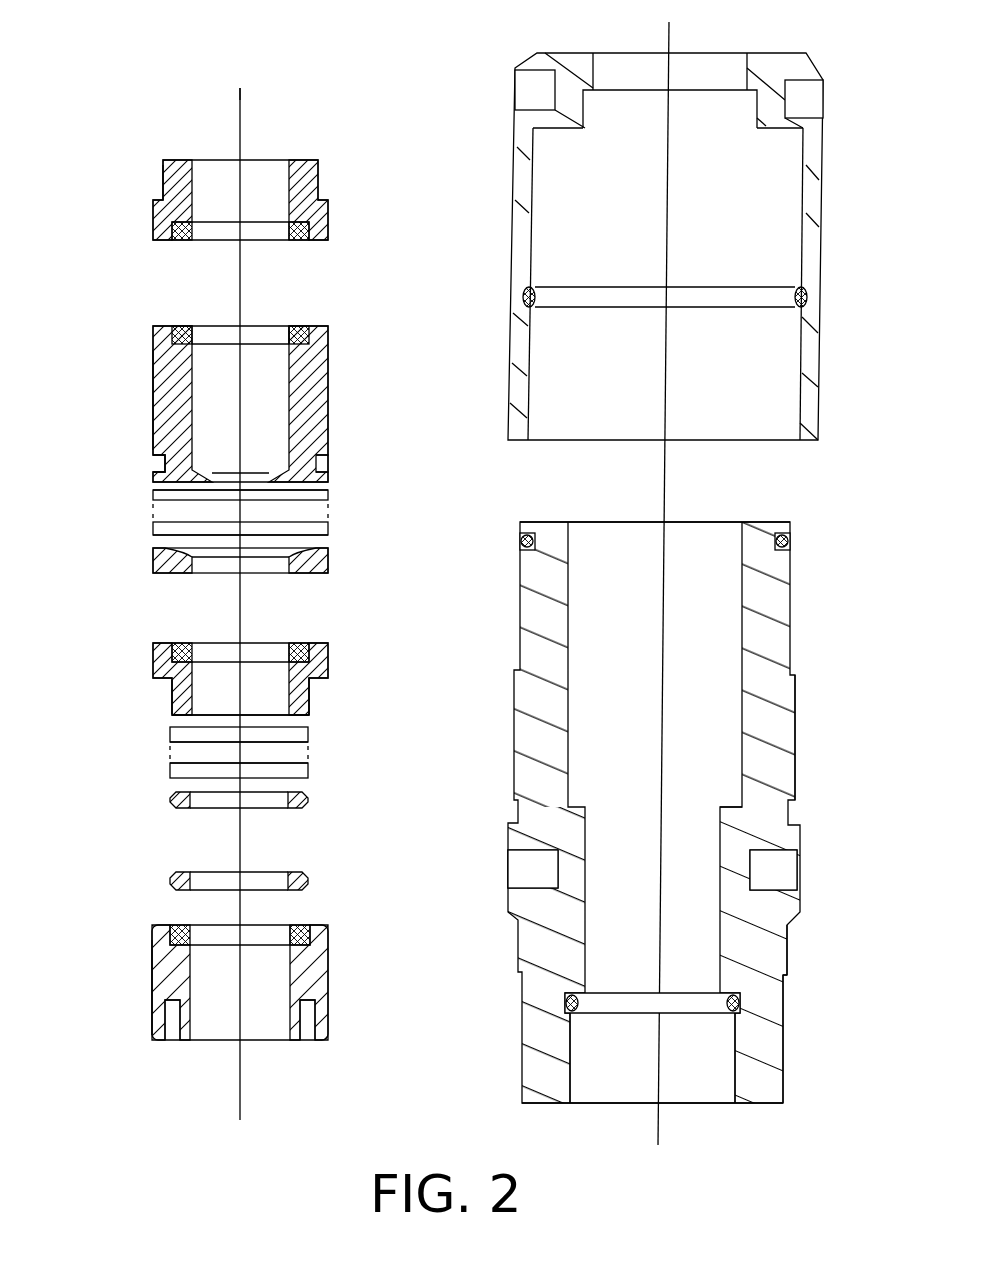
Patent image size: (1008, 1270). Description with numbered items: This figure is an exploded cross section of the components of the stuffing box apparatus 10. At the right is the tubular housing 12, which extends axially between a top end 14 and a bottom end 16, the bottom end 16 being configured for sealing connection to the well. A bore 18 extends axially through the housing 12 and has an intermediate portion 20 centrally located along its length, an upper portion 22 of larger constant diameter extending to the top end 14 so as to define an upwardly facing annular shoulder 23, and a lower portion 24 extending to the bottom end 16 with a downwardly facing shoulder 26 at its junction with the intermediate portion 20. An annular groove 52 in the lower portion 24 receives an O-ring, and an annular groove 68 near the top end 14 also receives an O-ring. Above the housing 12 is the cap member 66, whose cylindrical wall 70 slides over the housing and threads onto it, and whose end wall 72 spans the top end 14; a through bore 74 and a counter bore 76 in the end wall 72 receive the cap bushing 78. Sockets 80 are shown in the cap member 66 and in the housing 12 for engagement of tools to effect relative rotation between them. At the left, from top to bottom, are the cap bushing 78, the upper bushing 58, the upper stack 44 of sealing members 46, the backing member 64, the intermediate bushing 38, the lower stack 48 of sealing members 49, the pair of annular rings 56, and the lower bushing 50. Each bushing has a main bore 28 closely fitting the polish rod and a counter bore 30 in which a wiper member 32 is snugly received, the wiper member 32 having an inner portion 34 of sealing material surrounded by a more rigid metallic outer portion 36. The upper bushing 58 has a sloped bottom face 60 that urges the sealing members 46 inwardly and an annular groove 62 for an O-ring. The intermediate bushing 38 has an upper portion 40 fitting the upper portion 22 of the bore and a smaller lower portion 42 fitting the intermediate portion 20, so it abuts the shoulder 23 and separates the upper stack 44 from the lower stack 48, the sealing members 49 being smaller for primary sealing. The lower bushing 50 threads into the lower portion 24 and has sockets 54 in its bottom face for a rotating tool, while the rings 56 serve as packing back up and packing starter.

The stuffing box apparatus 10 is at (90, 82).
The tubular housing 12 is at (812, 672).
The top end 14 is at (790, 522).
The bottom end 16 is at (758, 1105).
The bore 18 is at (618, 1070).
The intermediate portion 20 is at (735, 938).
The upper portion 22 is at (742, 738).
The upwardly facing annular shoulder 23 is at (730, 790).
The lower portion 24 is at (755, 1048).
The downwardly facing shoulder 26 is at (745, 985).
The main bore 28 is at (163, 180).
The counter bore 30 is at (178, 233).
The wiper member 32 is at (222, 242).
The inner portion 34 is at (290, 242).
The outer portion 36 is at (300, 233).
The intermediate bushing 38 is at (362, 700).
The upper portion 40 is at (328, 665).
The lower portion 42 is at (310, 712).
The upper stack 44 is at (342, 487).
The sealing members 46 is at (153, 497).
The lower stack 48 is at (155, 727).
The sealing members 49 is at (308, 738).
The lower bushing 50 is at (125, 1018).
The annular groove 52 is at (572, 1000).
The sockets 54 is at (172, 1038).
The annular rings 56 is at (178, 880).
The upper bushing 58 is at (356, 410).
The bottom face 60 is at (160, 462).
The annular groove 62 is at (330, 470).
The backing member 64 is at (330, 560).
The cap member 66 is at (463, 100).
The annular groove 68 is at (790, 545).
The cylindrical wall 70 is at (814, 210).
The end wall 72 is at (782, 150).
The through bore 74 is at (712, 85).
The counter bore 76 is at (757, 122).
The cap bushing 78 is at (350, 200).
The pocket 80 is at (800, 100).